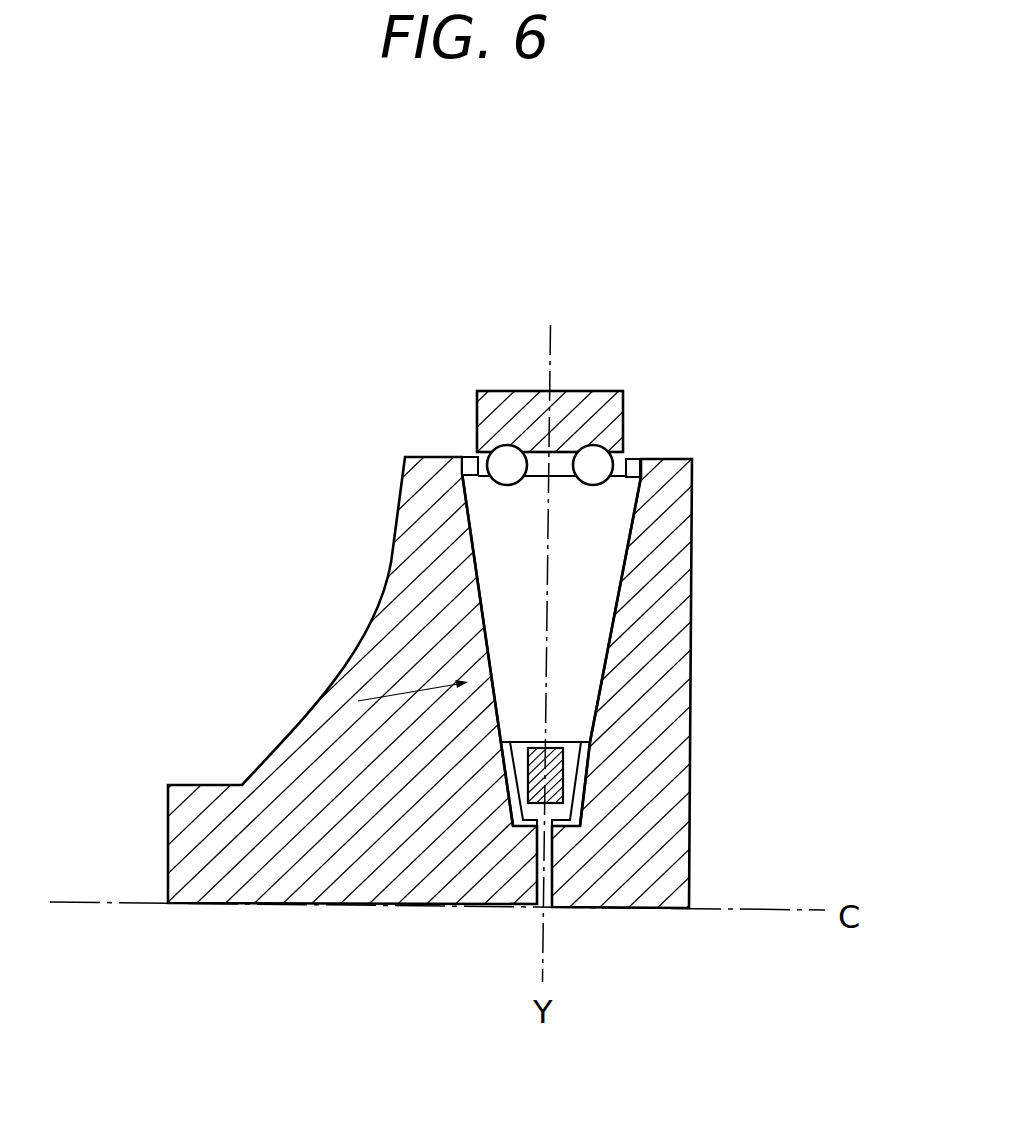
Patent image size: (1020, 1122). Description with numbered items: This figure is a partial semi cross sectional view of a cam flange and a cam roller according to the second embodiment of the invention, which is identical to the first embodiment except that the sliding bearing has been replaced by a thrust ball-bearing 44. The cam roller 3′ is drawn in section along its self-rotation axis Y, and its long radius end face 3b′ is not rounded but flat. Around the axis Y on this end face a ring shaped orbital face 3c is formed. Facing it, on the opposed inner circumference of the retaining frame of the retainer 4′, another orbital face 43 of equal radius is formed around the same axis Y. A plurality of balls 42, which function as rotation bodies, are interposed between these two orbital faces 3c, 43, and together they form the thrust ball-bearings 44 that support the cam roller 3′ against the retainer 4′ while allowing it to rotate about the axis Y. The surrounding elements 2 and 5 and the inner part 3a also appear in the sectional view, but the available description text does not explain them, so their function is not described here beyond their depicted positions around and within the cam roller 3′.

The housing body 2 is at (695, 493).
The base flange member 5 is at (387, 625).
The cam roller 3′ is at (588, 617).
The insert plug 3a is at (570, 752).
The orbital face 3c is at (603, 481).
The long radius end face 3b′ is at (633, 458).
The retainer 4′ is at (572, 402).
The balls 42 is at (497, 468).
The orbital face 43 is at (506, 450).
The thrust ball-bearing 44 is at (493, 483).